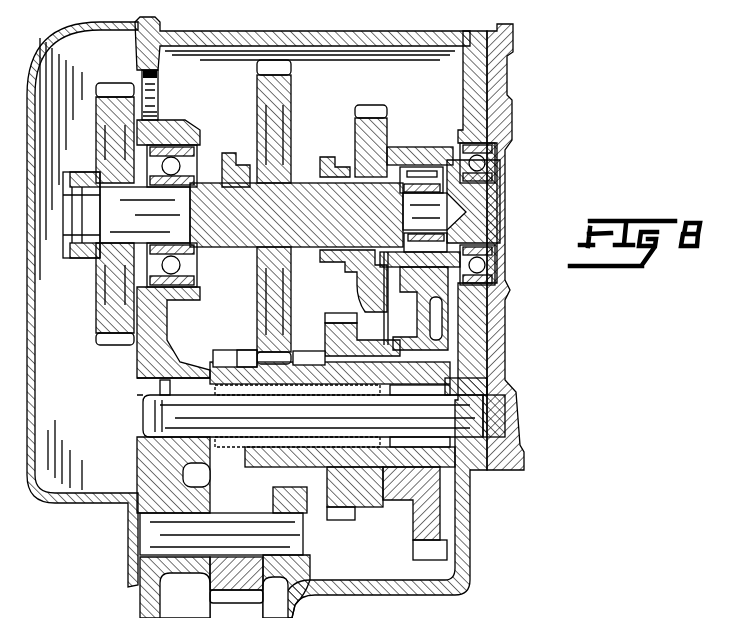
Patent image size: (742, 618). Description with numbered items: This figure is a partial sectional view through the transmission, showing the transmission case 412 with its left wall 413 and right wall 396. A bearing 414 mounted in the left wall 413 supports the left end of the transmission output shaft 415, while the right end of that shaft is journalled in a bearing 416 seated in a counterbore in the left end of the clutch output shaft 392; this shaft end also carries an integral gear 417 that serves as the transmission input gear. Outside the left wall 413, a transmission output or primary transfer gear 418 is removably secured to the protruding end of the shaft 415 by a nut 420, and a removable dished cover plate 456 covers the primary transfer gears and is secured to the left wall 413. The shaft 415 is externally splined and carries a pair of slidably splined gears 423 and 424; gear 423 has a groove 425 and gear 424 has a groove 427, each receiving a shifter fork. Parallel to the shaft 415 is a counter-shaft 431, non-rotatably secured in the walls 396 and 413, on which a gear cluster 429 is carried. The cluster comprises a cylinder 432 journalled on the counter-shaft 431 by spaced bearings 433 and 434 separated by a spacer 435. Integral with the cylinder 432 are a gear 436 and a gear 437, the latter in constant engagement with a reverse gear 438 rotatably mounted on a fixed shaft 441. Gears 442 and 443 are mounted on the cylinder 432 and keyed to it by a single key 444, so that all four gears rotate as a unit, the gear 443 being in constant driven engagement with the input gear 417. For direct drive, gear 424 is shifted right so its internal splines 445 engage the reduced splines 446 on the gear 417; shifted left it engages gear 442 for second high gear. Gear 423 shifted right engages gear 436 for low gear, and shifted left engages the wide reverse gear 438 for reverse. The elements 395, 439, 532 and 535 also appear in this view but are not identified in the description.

The dished cover plate 456 is at (37, 58).
The transmission case 412 is at (352, 33).
The right wall 396 is at (464, 92).
The transmission output or primary transfer gear 418 is at (109, 92).
The bearing 414 is at (172, 155).
The left wall 413 is at (160, 333).
The transmission output shaft 415 is at (92, 258).
The nut 420 is at (80, 175).
The clutch output shaft 392 is at (490, 200).
The bearing 395 is at (497, 172).
The gear 423 is at (286, 82).
The gear 424 is at (371, 108).
The groove 427 is at (338, 163).
The groove 425 is at (240, 161).
The integral gear 417 is at (433, 150).
The bearing 416 is at (418, 170).
The internal gear teeth or splines 445 is at (350, 280).
The reduced teeth or splines 446 is at (408, 273).
The key 444 is at (356, 348).
The gear 437 is at (221, 355).
The reverse gear 438 is at (246, 352).
The gear 436 is at (310, 355).
The bearing 433 is at (232, 397).
The spacer 435 is at (322, 393).
The bearing 434 is at (432, 393).
The counter-shaft 431 is at (483, 411).
The cylinder 432 is at (300, 469).
The gear 442 is at (347, 517).
The gear cluster 429 is at (366, 506).
The gear 443 is at (414, 556).
The fixed shaft 441 is at (152, 539).
The gear 439 is at (230, 595).
The member 532 is at (468, 614).
The member 535 is at (513, 614).